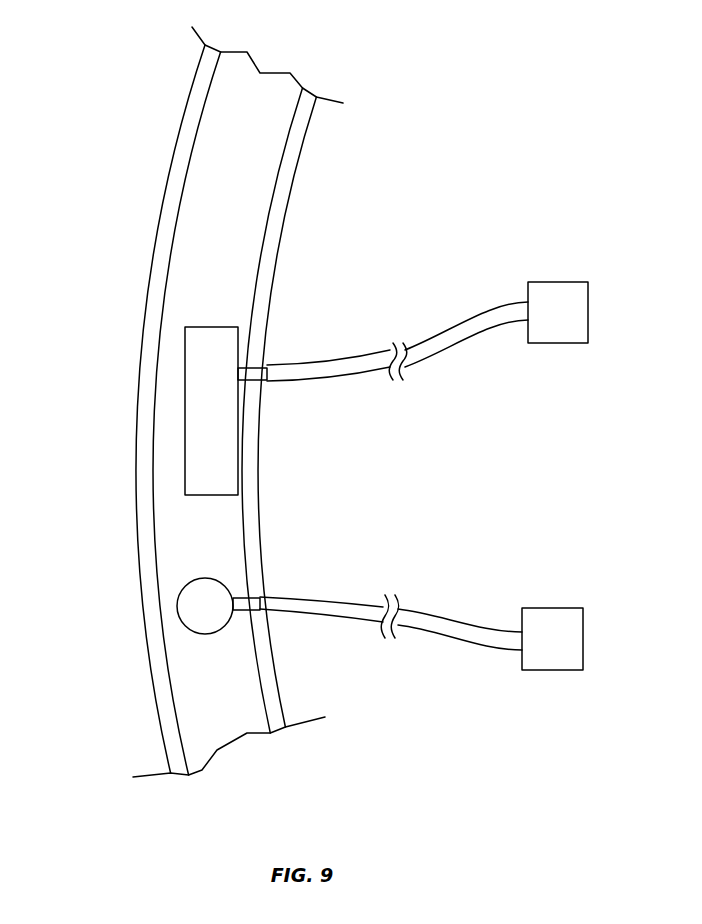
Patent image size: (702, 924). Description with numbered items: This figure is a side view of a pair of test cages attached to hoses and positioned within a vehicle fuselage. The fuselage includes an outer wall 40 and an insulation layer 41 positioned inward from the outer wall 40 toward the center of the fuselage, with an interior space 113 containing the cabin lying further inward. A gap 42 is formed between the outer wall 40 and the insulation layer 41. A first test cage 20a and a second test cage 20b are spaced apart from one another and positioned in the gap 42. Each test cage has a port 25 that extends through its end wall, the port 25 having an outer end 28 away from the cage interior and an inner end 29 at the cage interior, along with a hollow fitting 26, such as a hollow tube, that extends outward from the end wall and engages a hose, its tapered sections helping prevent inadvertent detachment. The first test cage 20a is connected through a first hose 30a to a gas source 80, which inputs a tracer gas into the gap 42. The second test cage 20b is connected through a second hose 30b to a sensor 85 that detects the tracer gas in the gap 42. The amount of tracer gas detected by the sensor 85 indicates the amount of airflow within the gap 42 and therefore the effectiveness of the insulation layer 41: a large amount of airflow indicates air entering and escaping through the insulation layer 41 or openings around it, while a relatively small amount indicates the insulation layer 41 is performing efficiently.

The interior space 113 is at (495, 174).
The outer wall 40 is at (164, 207).
The insulation layer 41 is at (276, 197).
The gap 42 is at (218, 170).
The first test cage 20a is at (200, 400).
The second test cage 20b is at (195, 595).
The port 25 is at (252, 366).
The hollow fitting 26 is at (258, 368).
The outer end 28 is at (268, 368).
The inner end 29 is at (240, 368).
The first hose 30a is at (437, 340).
The second hose 30b is at (430, 628).
The gas source 80 is at (558, 312).
The sensor 85 is at (552, 639).